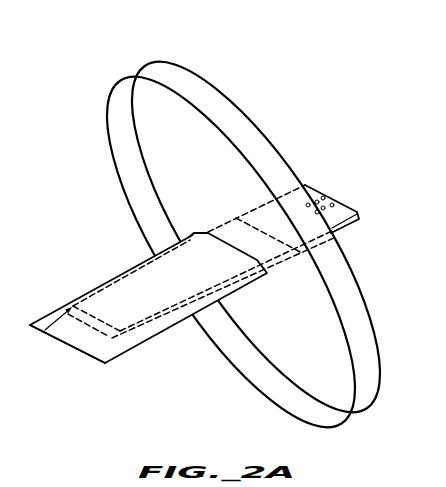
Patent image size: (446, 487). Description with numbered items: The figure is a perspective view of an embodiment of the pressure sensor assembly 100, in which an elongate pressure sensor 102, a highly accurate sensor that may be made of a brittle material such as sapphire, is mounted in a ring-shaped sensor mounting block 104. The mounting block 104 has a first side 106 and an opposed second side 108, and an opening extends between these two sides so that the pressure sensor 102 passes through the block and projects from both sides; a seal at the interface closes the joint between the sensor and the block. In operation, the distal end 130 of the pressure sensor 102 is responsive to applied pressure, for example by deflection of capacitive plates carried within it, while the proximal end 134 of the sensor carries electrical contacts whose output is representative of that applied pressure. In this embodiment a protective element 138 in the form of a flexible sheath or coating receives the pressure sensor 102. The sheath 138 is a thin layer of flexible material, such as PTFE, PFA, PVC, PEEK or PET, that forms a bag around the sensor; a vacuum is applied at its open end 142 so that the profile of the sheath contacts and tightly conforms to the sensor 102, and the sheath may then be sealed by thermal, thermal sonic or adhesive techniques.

The pressure sensor assembly 100 is at (98, 44).
The pressure sensor 102 is at (144, 331).
The sensor mounting block 104 is at (169, 78).
The first side 106 is at (141, 97).
The second side 108 is at (246, 110).
The distal end 130 is at (140, 256).
The proximal end 134 is at (309, 184).
The protective element 138 is at (75, 304).
The open end 142 is at (208, 232).